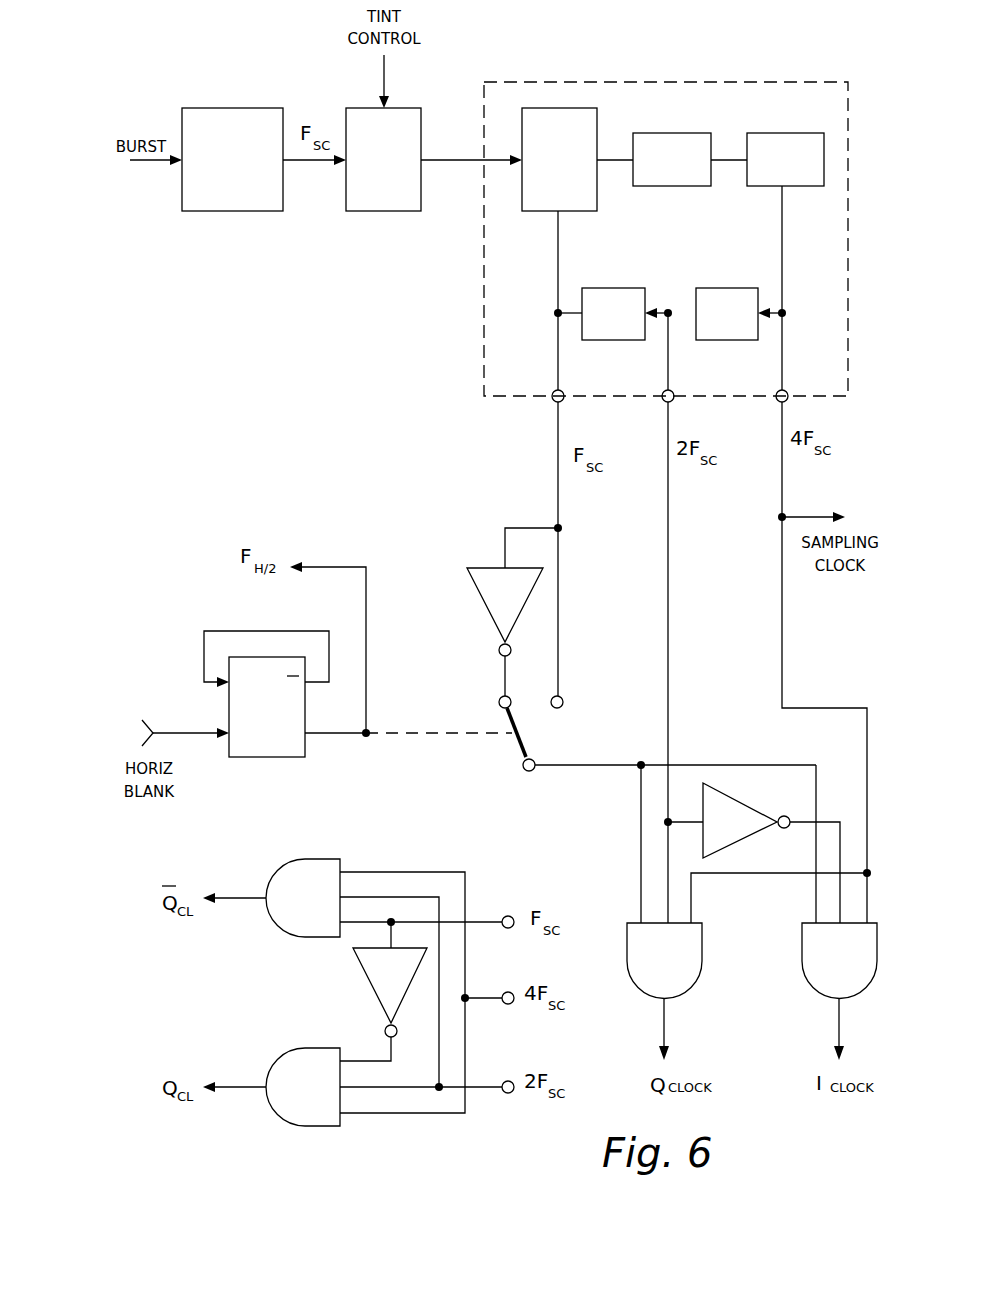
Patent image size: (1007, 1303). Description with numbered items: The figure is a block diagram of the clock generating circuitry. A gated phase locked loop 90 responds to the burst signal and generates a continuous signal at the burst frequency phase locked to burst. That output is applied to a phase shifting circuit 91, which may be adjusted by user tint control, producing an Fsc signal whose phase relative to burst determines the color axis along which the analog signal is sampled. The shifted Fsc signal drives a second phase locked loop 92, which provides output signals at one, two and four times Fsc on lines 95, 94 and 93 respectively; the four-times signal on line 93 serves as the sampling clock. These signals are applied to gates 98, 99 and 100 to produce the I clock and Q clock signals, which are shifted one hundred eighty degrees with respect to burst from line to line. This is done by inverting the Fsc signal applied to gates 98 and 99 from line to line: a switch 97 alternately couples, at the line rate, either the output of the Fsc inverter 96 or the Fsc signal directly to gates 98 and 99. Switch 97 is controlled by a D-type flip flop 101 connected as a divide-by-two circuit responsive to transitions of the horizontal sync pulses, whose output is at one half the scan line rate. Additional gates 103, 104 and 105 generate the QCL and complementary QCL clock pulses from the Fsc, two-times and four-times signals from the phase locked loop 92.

The phase locked loop 90 is at (235, 108).
The phase shifting circuit 91 is at (393, 212).
The second phase locked loop 92 is at (693, 82).
The 4Fsc sampling clock line 93 is at (782, 492).
The 2Fsc line 94 is at (668, 509).
The Fsc line 95 is at (555, 440).
The Fsc inverter 96 is at (512, 612).
The switch 97 is at (520, 747).
The gate 98 is at (839, 991).
The gate 99 is at (664, 991).
The gate 100 is at (752, 853).
The D-type flip flop 101 is at (253, 757).
The gate 103 is at (352, 986).
The gate 104 is at (352, 1087).
The gate 105 is at (383, 989).